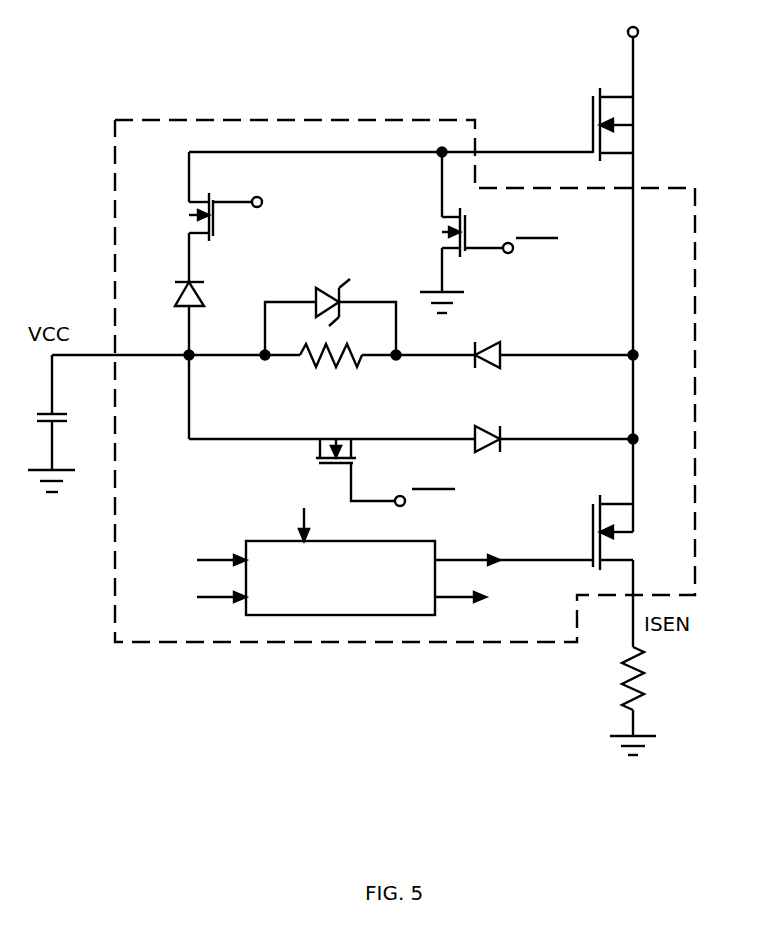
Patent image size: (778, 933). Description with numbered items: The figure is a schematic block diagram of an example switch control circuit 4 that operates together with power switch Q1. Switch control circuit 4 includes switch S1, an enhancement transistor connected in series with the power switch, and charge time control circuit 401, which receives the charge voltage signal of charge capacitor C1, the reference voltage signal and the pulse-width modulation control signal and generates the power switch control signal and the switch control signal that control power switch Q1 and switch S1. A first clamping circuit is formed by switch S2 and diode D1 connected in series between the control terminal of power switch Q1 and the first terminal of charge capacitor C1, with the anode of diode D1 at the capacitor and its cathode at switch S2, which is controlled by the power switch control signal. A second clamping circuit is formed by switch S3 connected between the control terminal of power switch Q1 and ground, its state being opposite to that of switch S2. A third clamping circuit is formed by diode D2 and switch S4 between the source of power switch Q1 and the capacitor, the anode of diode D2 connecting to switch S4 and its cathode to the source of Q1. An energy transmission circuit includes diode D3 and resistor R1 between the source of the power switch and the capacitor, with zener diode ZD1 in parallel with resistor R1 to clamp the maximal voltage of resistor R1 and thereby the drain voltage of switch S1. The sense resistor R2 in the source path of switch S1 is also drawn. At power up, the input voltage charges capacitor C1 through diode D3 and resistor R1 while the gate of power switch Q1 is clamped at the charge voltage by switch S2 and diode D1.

The switch control circuit 4 is at (232, 118).
The charge time control circuit 401 is at (328, 540).
The power switch Q1 is at (634, 81).
The switch S1 is at (634, 532).
The switch S2 is at (226, 217).
The switch S3 is at (485, 232).
The switch S4 is at (379, 464).
The diode D1 is at (175, 317).
The diode D2 is at (554, 427).
The diode D3 is at (554, 343).
The zener diode ZD1 is at (330, 305).
The resistor R1 is at (331, 371).
The sense resistor R2 is at (646, 701).
The charge capacitor C1 is at (64, 423).